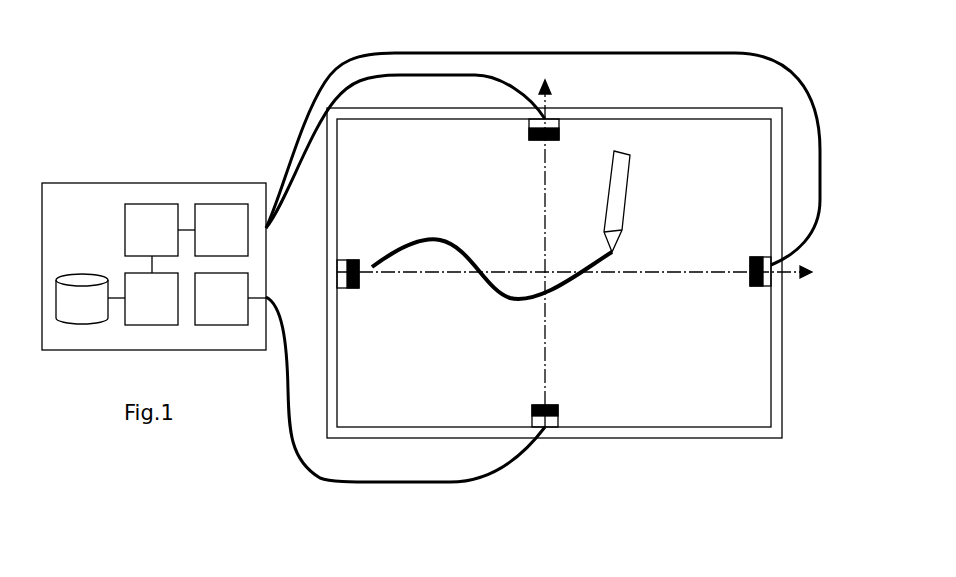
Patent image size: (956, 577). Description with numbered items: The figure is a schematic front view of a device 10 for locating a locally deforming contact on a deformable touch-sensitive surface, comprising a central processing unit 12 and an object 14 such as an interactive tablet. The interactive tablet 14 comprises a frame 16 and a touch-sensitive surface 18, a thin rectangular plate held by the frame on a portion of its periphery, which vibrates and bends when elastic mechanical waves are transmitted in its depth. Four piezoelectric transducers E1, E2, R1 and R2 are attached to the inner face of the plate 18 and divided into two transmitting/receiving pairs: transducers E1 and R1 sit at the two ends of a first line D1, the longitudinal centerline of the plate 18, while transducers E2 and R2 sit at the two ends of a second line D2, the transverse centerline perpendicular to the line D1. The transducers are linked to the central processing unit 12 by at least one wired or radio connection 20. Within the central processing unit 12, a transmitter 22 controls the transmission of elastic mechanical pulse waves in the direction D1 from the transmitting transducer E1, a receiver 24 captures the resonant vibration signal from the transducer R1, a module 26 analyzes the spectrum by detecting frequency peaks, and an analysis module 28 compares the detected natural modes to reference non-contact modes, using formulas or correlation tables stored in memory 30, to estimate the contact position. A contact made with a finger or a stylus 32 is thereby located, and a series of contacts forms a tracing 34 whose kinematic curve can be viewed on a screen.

The device for locating a locally deforming contact 10 is at (186, 122).
The central processing unit 12 is at (94, 183).
The object 14 is at (648, 108).
The frame 16 is at (697, 119).
The touch-sensitive surface 18 is at (420, 159).
The wired or radio connection 20 is at (306, 118).
The transmitter 22 is at (230, 299).
The receiver 24 is at (213, 230).
The module for analyzing the spectrum 26 is at (151, 238).
The analysis module 28 is at (151, 299).
The memory 30 is at (90, 299).
The stylus 32 is at (632, 173).
The tracing 34 is at (494, 298).
The transmitting transducer E1 is at (353, 259).
The transmitting transducer E2 is at (531, 409).
The receiving transducer R1 is at (752, 257).
The receiving transducer R2 is at (561, 140).
The first line D1 is at (724, 276).
The second line D2 is at (542, 169).